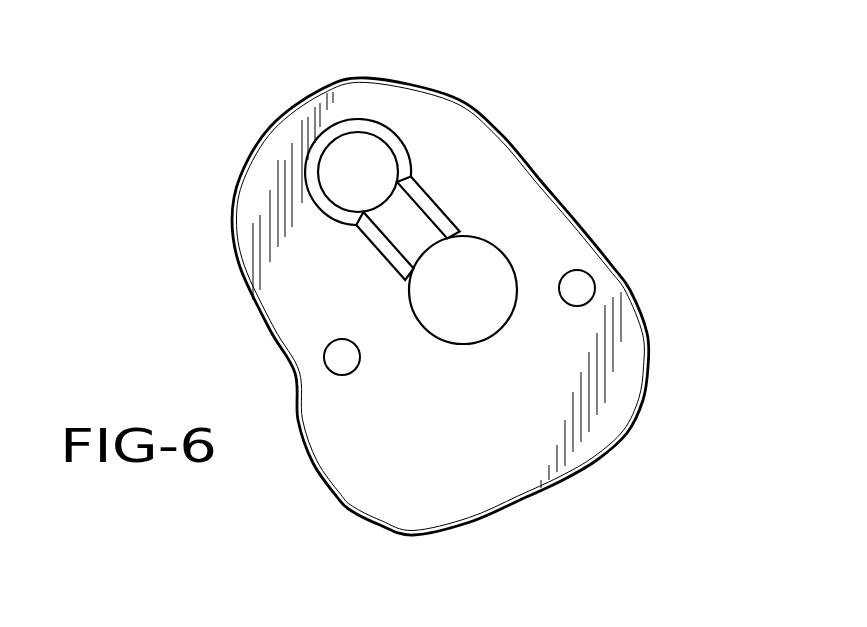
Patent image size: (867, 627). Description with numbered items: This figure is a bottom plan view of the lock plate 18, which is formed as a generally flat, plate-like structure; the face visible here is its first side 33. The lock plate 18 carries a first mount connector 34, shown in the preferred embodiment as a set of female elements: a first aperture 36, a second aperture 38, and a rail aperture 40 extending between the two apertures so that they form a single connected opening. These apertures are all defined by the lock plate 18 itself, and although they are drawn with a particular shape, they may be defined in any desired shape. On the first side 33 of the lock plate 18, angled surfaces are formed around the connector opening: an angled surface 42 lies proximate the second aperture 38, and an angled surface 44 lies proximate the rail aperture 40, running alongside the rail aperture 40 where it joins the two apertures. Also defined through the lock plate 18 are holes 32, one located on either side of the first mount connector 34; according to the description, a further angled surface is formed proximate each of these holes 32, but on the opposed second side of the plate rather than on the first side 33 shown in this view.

The lock plate 18 is at (560, 139).
The first side 33 is at (360, 468).
The holes 32 is at (338, 358).
The first mount connector 34 is at (395, 328).
The first aperture 36 is at (454, 320).
The second aperture 38 is at (343, 165).
The rail aperture 40 is at (405, 222).
The angled surface 42 is at (314, 160).
The angled surface 44 is at (442, 221).